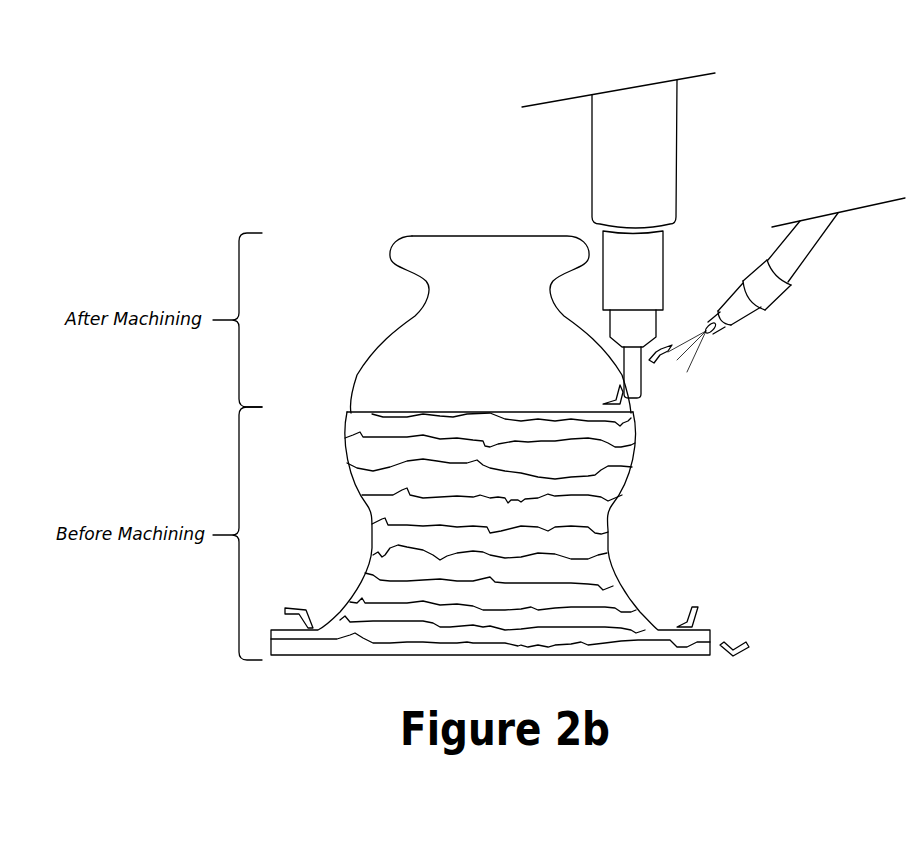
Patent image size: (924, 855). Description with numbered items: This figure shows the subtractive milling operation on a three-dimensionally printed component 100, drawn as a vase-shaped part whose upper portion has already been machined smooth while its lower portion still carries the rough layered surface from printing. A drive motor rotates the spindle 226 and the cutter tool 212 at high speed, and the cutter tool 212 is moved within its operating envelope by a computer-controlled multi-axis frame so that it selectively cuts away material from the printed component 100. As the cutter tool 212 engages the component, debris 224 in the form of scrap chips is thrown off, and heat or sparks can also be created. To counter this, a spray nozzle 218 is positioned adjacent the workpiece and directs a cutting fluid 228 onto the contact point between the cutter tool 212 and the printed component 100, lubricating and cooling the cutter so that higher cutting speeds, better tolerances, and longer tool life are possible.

The 3D printed component 100 is at (386, 218).
The spindle 226 is at (663, 242).
The cutter tool 212 is at (645, 382).
The spray nozzle 218 is at (748, 318).
The cutting fluid 228 is at (695, 366).
The debris 224 is at (653, 350).